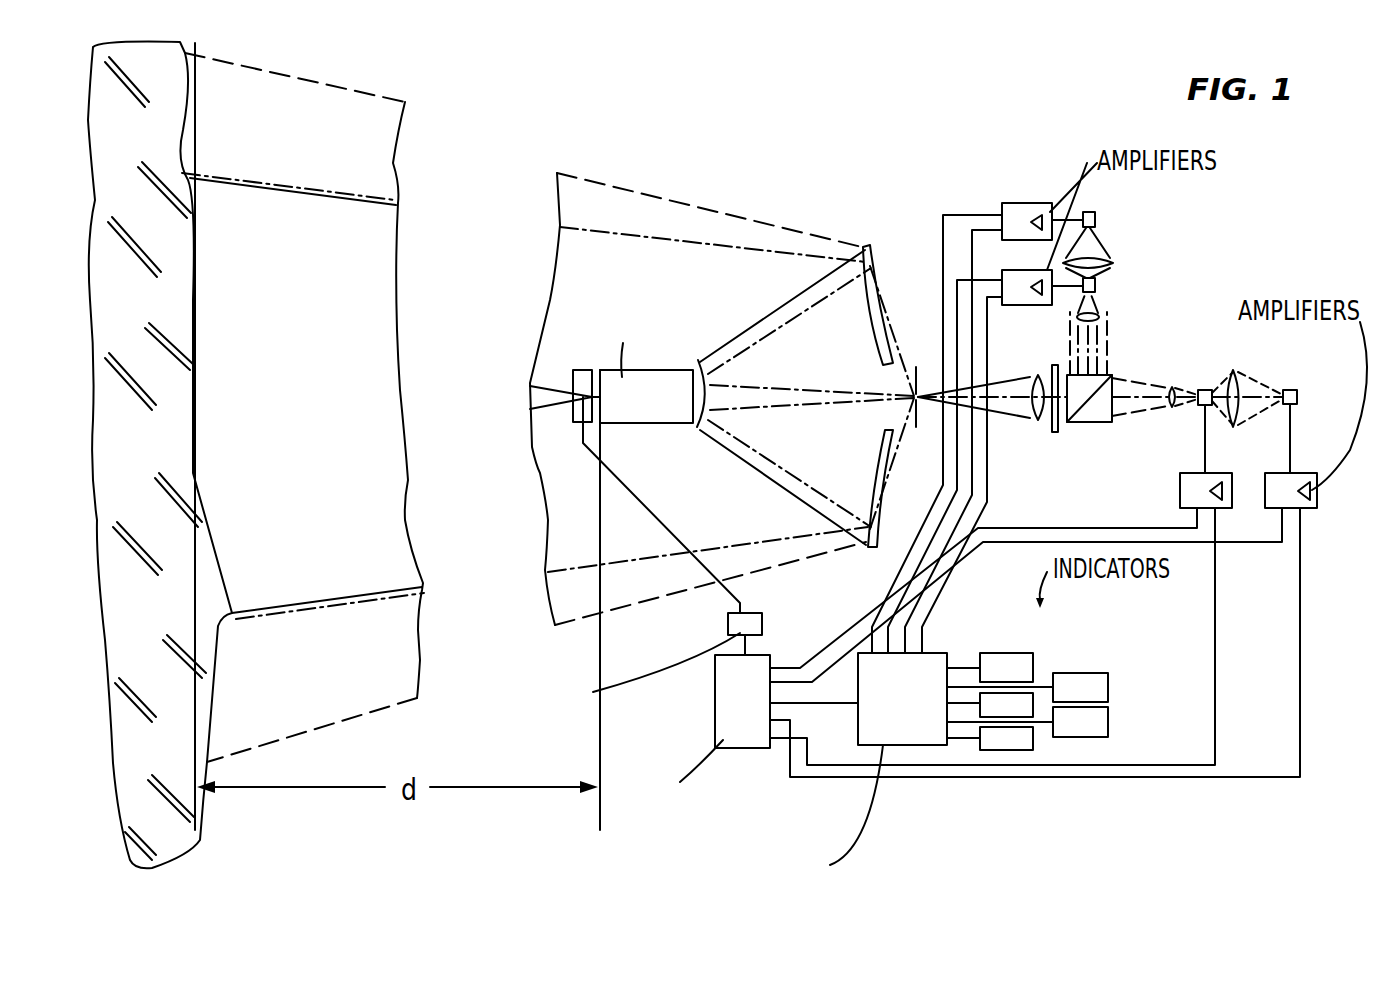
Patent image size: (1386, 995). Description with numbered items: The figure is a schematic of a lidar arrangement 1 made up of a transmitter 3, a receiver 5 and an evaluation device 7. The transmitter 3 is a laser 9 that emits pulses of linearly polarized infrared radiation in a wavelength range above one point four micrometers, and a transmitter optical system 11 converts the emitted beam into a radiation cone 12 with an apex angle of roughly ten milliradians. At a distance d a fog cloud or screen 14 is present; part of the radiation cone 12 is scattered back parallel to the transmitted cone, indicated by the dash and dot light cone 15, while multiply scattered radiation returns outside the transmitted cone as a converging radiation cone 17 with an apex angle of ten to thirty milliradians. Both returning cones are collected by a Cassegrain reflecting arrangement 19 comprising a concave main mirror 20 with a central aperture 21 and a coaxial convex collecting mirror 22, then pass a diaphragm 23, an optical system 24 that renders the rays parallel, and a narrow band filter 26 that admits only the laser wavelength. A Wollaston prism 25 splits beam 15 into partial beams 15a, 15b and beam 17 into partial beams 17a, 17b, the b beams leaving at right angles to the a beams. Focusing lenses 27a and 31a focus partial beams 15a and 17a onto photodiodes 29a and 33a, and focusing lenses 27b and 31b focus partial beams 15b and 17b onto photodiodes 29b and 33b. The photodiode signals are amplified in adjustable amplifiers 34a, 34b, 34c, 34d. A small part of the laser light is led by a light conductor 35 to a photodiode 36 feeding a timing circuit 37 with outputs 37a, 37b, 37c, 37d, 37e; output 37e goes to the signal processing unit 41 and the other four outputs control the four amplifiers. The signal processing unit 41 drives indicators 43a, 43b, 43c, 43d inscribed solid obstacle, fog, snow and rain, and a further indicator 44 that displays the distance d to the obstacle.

The lidar arrangement 1 is at (873, 89).
The transmitter 3 is at (641, 448).
The receiver 5 is at (975, 180).
The evaluation device 7 is at (960, 797).
The laser 9 is at (656, 416).
The transmitter optical system 11 is at (583, 380).
The radiation cone 12 is at (307, 193).
The fog cloud or screen 14 is at (150, 457).
The light cone 15 is at (250, 181).
The partial beam 15a is at (1148, 410).
The partial beam 15b is at (1088, 340).
The converging radiation cone 17 is at (255, 67).
The partial beam 17a is at (1182, 378).
The partial beam 17b is at (1068, 355).
The Cassegrain reflecting arrangement 19 is at (848, 473).
The concave main mirror 20 is at (884, 307).
The central aperture 21 is at (986, 425).
The convex collecting mirror 22 is at (703, 423).
The diaphragm 23 is at (913, 372).
The optical system 24 is at (1044, 430).
The Wollaston prism 25 is at (1097, 423).
The narrow band filter 26 is at (1055, 433).
The focusing lens 27a is at (1173, 420).
The focusing lens 27b is at (1095, 317).
The photodiode 29a is at (1210, 408).
The photodiode 29b is at (1097, 285).
The focusing lens 31a is at (1230, 395).
The focusing lens 31b is at (1095, 255).
The photodiode 33a is at (1293, 390).
The photodiode 33b is at (1097, 210).
The amplifier 34a is at (1190, 490).
The amplifier 34b is at (1293, 482).
The amplifier 34c is at (1012, 277).
The amplifier 34d is at (1025, 212).
The light conductor 35 is at (690, 547).
The photodiode 36 is at (738, 625).
The timing circuit 37 is at (758, 718).
The output 37a is at (867, 580).
The output 37b is at (857, 617).
The output 37c is at (783, 738).
The output 37d is at (837, 766).
The output 37e is at (940, 778).
The signal processing unit 41 is at (918, 716).
The indicator 43a is at (993, 667).
The indicator 43b is at (1067, 680).
The indicator 43c is at (1017, 705).
The indicator 43d is at (1088, 722).
The indicator 44 is at (1003, 740).